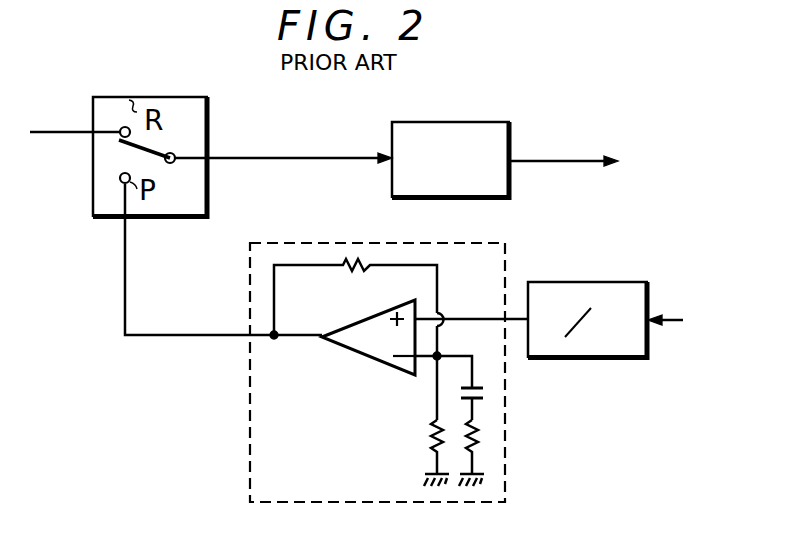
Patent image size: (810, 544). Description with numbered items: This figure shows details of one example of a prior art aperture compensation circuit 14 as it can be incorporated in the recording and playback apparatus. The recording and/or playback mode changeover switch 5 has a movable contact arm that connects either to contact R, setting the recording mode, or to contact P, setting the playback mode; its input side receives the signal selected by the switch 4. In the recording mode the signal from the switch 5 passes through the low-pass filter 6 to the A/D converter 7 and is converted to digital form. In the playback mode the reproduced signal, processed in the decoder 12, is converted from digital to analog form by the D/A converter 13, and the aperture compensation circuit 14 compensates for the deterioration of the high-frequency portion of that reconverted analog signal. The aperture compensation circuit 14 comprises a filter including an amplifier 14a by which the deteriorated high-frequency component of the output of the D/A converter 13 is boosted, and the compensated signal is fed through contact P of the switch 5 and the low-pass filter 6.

The switch 4 is at (73, 113).
The recording/playback mode changeover switch 5 is at (213, 126).
The low-pass filter 6 is at (512, 144).
The A/D converter 7 is at (590, 163).
The decoder 12 is at (696, 323).
The D/A converter 13 is at (612, 282).
The aperture compensation circuit 14 is at (506, 434).
The amplifier 14a is at (353, 352).